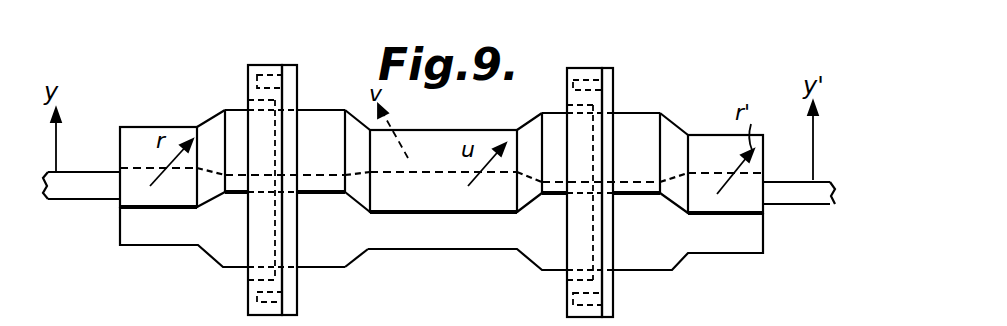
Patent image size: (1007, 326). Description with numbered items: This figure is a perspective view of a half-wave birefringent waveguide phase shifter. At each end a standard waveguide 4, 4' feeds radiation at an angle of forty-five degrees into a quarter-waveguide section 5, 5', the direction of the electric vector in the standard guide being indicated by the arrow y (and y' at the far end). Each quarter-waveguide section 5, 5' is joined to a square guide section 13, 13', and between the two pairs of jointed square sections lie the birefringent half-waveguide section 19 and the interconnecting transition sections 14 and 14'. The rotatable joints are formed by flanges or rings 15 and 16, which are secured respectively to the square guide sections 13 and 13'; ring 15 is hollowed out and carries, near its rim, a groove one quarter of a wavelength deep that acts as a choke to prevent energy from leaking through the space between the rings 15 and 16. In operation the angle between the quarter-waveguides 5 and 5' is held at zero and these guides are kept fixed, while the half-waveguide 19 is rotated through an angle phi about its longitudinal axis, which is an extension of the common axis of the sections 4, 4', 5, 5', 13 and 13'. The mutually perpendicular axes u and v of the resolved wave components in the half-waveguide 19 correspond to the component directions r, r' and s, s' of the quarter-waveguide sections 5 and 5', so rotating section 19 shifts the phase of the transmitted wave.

The standard waveguide 4 is at (81, 206).
The standard waveguide section 4' is at (799, 213).
The quarter-wave guide section 5 is at (147, 183).
The quarter-waveguide section 5' is at (725, 186).
The square guide section 13 is at (343, 259).
The square guide section 13' is at (539, 262).
The transition guide section 14 is at (364, 147).
The transition section 14' is at (502, 144).
The ring 15 is at (316, 56).
The ring 16 is at (628, 66).
The birefringent half-waveguide section 19 is at (461, 128).